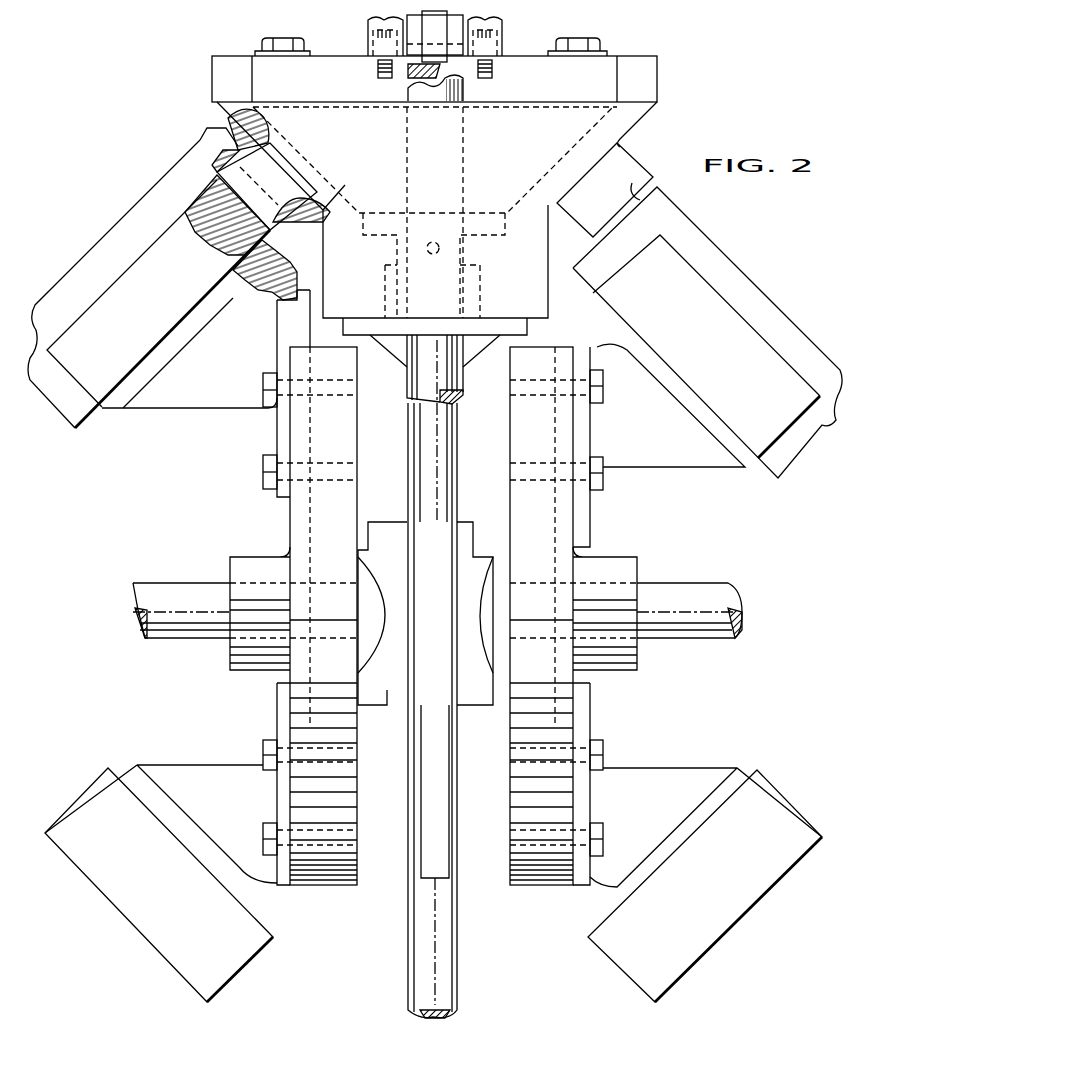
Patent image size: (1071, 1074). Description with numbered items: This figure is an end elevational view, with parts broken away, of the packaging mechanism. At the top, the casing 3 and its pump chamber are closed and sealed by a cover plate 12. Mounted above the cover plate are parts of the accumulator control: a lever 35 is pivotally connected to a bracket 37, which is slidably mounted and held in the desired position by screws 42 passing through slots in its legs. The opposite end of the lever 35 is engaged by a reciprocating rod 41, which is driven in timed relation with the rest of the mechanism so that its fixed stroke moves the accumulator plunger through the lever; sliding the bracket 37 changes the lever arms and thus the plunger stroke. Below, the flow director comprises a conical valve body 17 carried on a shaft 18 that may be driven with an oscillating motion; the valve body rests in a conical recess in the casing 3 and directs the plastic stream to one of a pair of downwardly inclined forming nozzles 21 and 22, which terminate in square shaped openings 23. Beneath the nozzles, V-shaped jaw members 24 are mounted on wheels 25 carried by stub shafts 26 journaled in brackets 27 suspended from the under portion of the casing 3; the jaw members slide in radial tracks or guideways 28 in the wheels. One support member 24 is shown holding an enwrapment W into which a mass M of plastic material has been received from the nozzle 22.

The cover plate 12 is at (212, 72).
The casing 3 is at (215, 105).
The conical valve body 17 is at (285, 104).
The shaft 18 is at (413, 453).
The forming nozzle 21 is at (632, 152).
The forming nozzle 22 is at (205, 127).
The square shaped openings 23 is at (302, 218).
The jaw member 24 is at (180, 302).
The wheel 25 is at (335, 887).
The stub shaft 26 is at (160, 590).
The bracket 27 is at (388, 530).
The tracks or guideways 28 is at (300, 427).
The lever 35 is at (467, 13).
The bracket 37 is at (502, 47).
The reciprocating rod 41 is at (408, 98).
The screws 42 is at (368, 32).
The mass of plastic material M is at (205, 190).
The enwrapment W is at (138, 208).